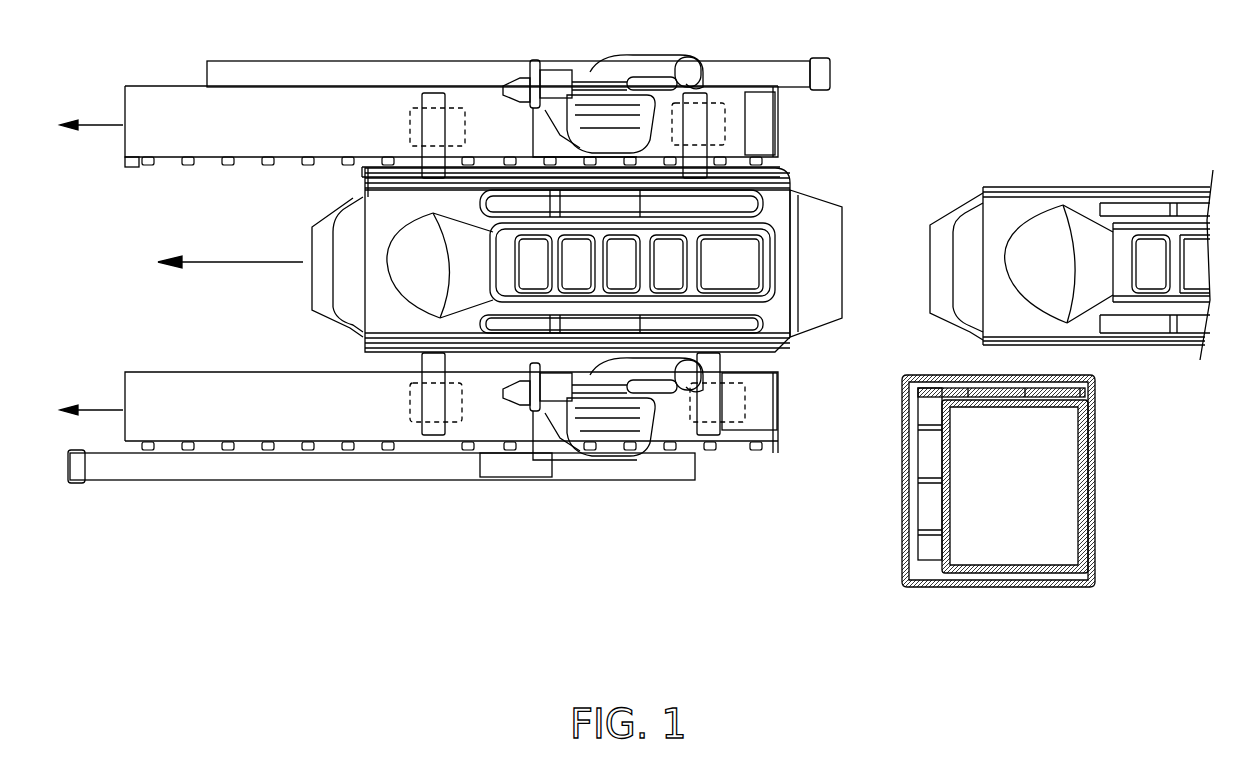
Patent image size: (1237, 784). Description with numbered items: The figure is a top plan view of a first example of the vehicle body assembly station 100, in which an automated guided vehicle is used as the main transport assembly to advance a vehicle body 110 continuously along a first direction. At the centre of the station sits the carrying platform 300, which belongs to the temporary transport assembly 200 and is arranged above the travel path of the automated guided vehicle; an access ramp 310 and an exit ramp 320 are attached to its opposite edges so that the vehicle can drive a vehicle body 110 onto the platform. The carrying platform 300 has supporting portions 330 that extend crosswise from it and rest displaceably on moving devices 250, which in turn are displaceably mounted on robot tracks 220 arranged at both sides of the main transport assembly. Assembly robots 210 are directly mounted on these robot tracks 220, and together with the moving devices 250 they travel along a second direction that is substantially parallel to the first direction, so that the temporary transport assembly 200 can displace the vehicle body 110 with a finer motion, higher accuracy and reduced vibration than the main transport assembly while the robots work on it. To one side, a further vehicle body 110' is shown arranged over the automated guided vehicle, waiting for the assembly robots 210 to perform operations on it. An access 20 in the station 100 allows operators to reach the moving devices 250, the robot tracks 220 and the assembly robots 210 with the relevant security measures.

The vehicle body assembly station 100 is at (636, 295).
The vehicle body 110 is at (544, 168).
The vehicle body 110' is at (1071, 239).
The temporary transport assembly 200 is at (186, 92).
The assembly robot 210 is at (552, 90).
The robot track 220 is at (303, 96).
The moving device 250 is at (461, 100).
The carrying platform 300 is at (609, 249).
The access ramp 310 is at (808, 213).
The exit ramp 320 is at (313, 230).
The supporting portion 330 is at (437, 96).
The access 20 is at (1050, 445).